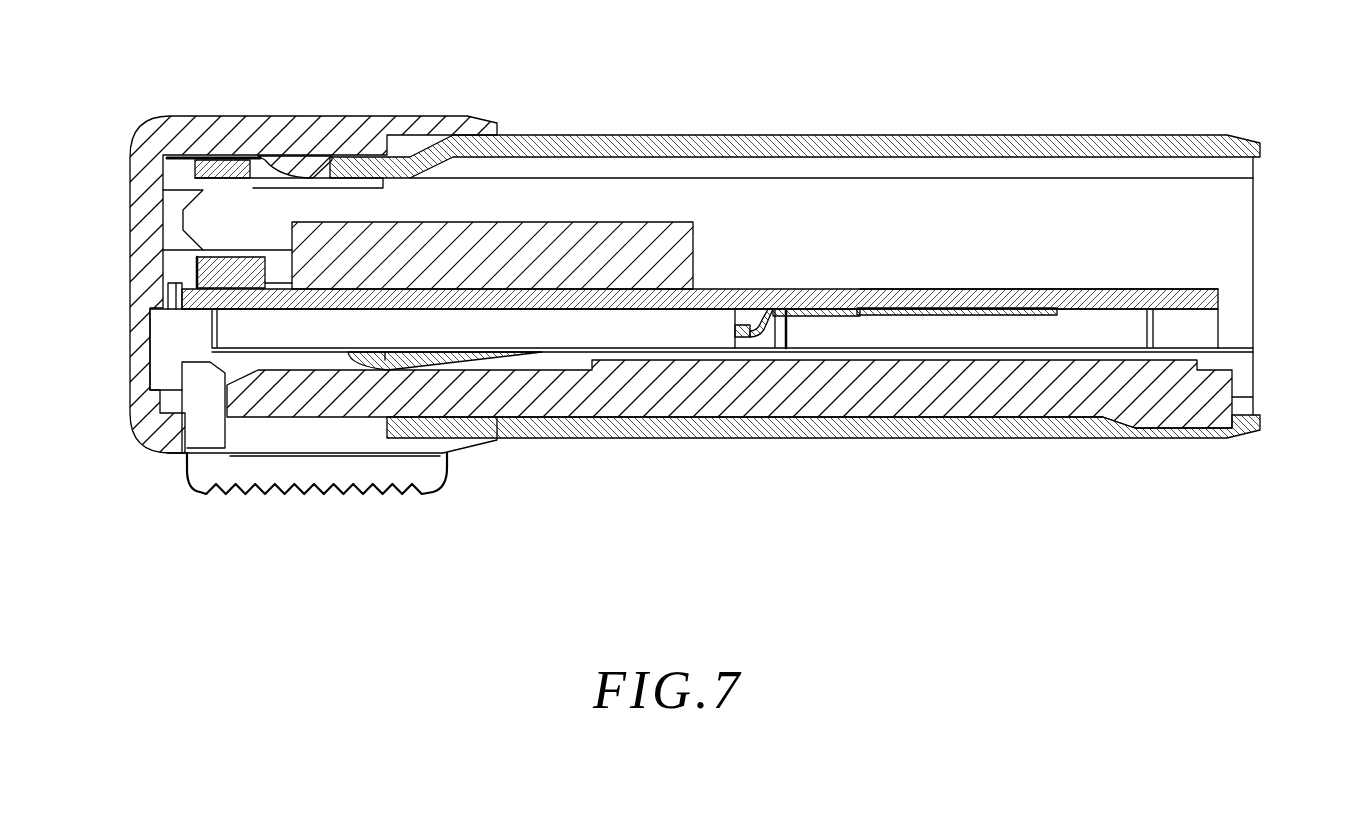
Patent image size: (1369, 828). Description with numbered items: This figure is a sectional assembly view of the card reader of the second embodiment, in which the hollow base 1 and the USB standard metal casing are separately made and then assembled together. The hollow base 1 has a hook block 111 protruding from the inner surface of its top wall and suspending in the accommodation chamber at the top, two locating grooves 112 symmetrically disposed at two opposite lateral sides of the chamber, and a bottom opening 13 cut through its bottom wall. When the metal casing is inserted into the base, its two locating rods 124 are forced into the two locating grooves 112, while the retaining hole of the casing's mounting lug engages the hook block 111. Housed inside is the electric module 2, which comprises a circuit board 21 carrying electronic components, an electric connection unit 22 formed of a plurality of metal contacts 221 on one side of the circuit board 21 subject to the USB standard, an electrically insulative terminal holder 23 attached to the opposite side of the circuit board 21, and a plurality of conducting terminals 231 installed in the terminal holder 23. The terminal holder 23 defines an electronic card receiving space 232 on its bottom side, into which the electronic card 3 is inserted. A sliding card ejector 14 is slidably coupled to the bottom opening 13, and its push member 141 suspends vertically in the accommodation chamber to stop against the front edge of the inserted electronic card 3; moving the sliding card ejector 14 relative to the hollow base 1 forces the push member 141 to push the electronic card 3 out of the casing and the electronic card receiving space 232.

The hollow base 1 is at (308, 124).
The hook block 111 is at (283, 162).
The locating groove 112 is at (177, 267).
The locating rod 124 is at (207, 210).
The electric module 2 is at (736, 197).
The circuit board 21 is at (752, 293).
The electric connection unit 22 is at (1085, 280).
The metal contact 221 is at (980, 288).
The electrically insulative terminal holder 23 is at (1220, 322).
The conducting terminal 231 is at (815, 305).
The electronic card receiving space 232 is at (1215, 357).
The electronic card 3 is at (1155, 406).
The bottom opening 13 is at (442, 454).
The sliding card ejector 14 is at (317, 478).
The push member 141 is at (198, 402).